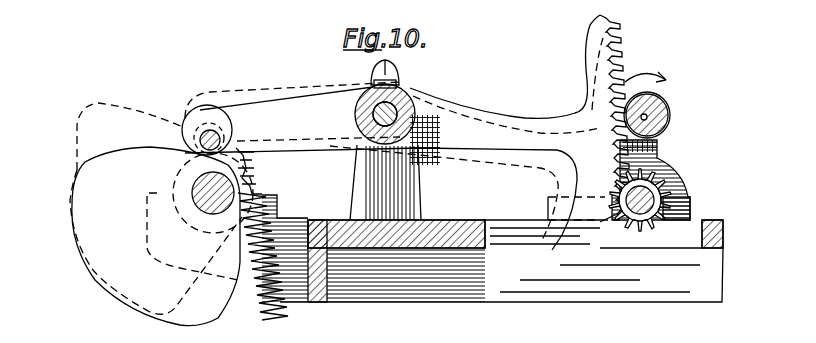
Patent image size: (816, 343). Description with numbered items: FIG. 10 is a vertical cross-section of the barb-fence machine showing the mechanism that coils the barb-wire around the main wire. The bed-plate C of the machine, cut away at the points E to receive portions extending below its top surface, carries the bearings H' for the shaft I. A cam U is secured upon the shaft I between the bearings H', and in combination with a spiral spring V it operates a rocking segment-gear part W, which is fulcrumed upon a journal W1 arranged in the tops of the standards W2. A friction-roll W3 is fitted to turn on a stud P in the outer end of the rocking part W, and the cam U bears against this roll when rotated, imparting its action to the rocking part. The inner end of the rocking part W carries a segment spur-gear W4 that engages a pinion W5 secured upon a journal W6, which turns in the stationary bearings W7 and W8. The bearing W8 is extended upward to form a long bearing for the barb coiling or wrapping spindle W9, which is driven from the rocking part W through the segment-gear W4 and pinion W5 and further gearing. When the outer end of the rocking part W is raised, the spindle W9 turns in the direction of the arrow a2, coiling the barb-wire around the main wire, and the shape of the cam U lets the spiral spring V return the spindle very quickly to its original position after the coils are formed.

The cam U is at (120, 100).
The bearing H' is at (156, 236).
The shaft I is at (207, 217).
The stud P is at (219, 137).
The rocking segment-gear part W is at (371, 112).
The journal W1 is at (407, 90).
The standard W2 is at (420, 184).
The friction-roll W3 is at (228, 141).
The segment spur-gear W4 is at (481, 132).
The pinion W5 is at (658, 155).
The journal W6 is at (665, 177).
The stationary bearing W7 is at (690, 197).
The stationary bearing W8 is at (660, 100).
The barb coiling or wrapping spindle W9 is at (652, 118).
The arrow a2 is at (645, 67).
The bed-plate C is at (318, 220).
The cut-away point E is at (488, 240).
The spiral spring V is at (283, 316).